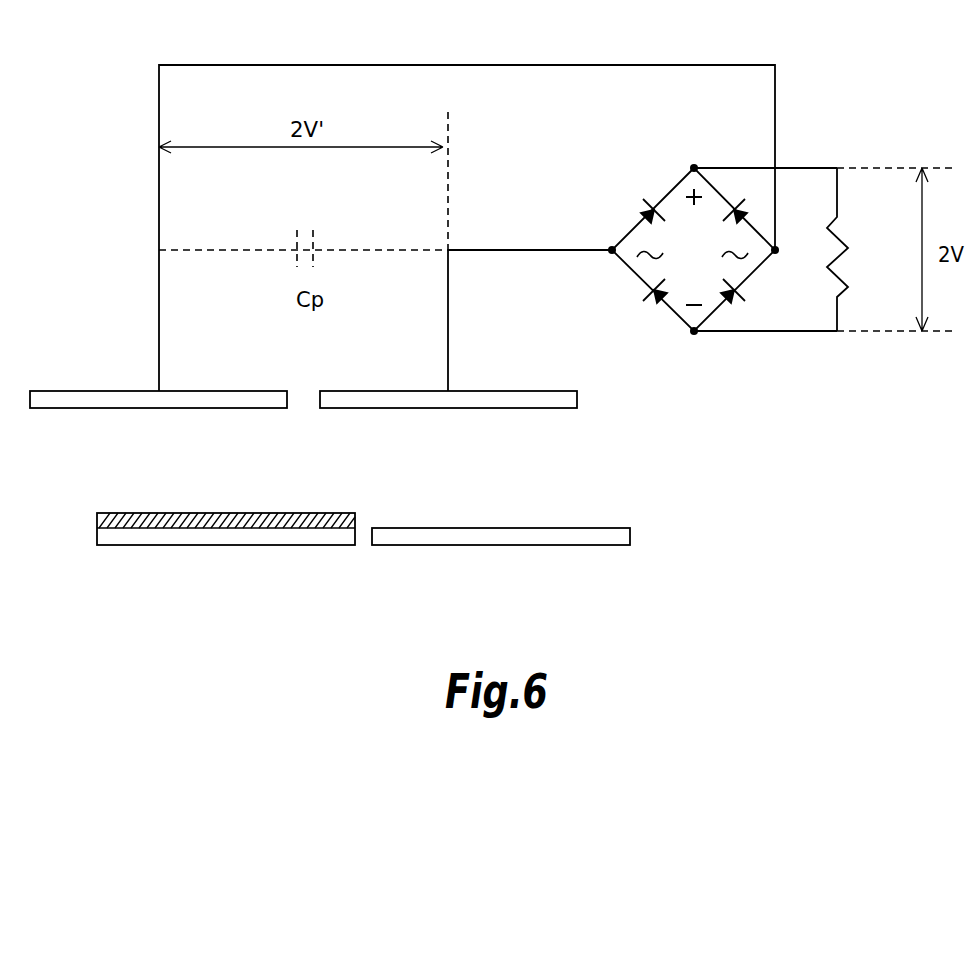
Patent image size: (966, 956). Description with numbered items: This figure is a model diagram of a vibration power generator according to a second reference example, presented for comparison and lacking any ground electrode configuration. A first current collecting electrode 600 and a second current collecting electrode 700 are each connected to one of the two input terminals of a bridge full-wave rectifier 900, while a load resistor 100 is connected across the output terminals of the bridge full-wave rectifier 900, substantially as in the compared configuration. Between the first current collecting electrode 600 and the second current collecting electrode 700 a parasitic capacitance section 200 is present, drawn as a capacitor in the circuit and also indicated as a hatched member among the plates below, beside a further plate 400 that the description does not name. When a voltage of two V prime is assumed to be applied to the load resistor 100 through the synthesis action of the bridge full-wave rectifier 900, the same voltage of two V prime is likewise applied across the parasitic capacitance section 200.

The parasitic capacitance section 200 is at (313, 230).
The first current collecting electrode 600 is at (117, 409).
The second current collecting electrode 700 is at (481, 409).
The conductive plate 400 is at (472, 546).
The bridge full-wave rectifier 900 is at (672, 313).
The load resistor 100 is at (848, 248).